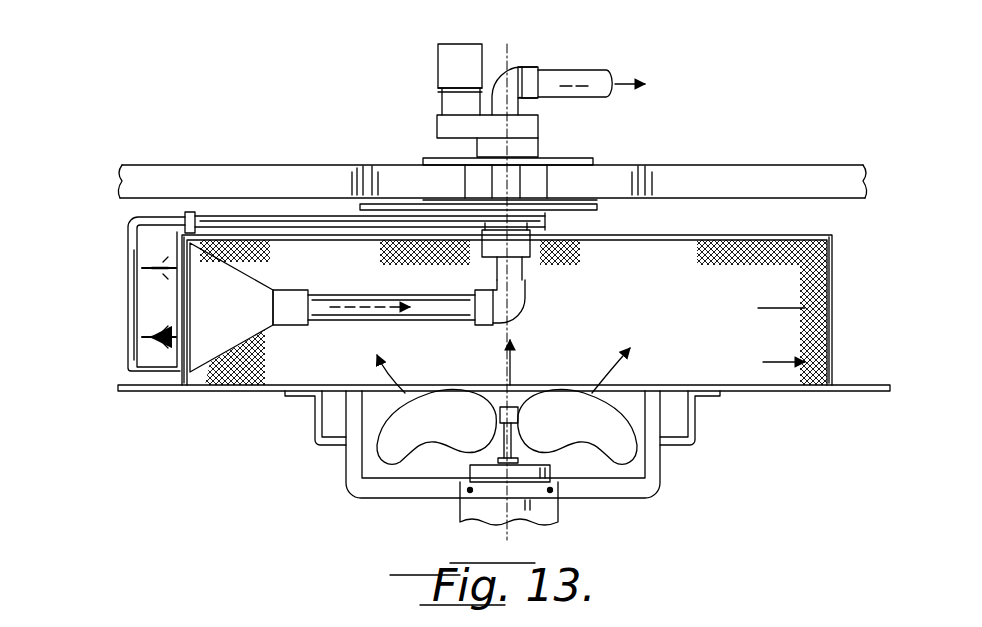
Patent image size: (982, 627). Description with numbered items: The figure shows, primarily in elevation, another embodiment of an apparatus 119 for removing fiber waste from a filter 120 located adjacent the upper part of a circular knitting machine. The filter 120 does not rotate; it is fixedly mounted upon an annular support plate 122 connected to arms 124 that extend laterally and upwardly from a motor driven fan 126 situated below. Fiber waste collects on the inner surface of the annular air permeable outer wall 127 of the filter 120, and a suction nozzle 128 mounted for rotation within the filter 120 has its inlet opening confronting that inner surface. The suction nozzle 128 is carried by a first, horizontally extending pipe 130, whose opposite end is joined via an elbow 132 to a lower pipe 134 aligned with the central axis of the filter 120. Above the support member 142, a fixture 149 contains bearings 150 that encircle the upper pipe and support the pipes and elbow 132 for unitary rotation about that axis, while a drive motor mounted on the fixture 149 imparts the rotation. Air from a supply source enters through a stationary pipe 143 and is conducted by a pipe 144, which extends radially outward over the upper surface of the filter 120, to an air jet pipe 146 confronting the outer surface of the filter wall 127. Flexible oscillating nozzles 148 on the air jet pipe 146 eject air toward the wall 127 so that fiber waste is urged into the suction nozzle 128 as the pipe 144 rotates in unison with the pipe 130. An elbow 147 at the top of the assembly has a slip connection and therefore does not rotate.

The apparatus for removing fiber waste 119 is at (394, 102).
The filter 120 is at (712, 301).
The annular support plate 122 is at (780, 391).
The arms 124 is at (343, 455).
The motor driven fan 126 is at (415, 480).
The annular air permeable outer wall 127 is at (838, 280).
The suction nozzle 128 is at (227, 385).
The first horizontally extending pipe 130 is at (400, 292).
The elbow 132 is at (525, 300).
The lower pipe 134 is at (533, 250).
The support member 142 is at (758, 172).
The stationary pipe 143 is at (410, 205).
The pipe 144 is at (316, 216).
The air jet pipe 146 is at (127, 254).
The elbow 147 is at (500, 84).
The flexible oscillating nozzles 148 is at (592, 77).
The fixture 149 is at (535, 137).
The bearings 150 is at (438, 60).